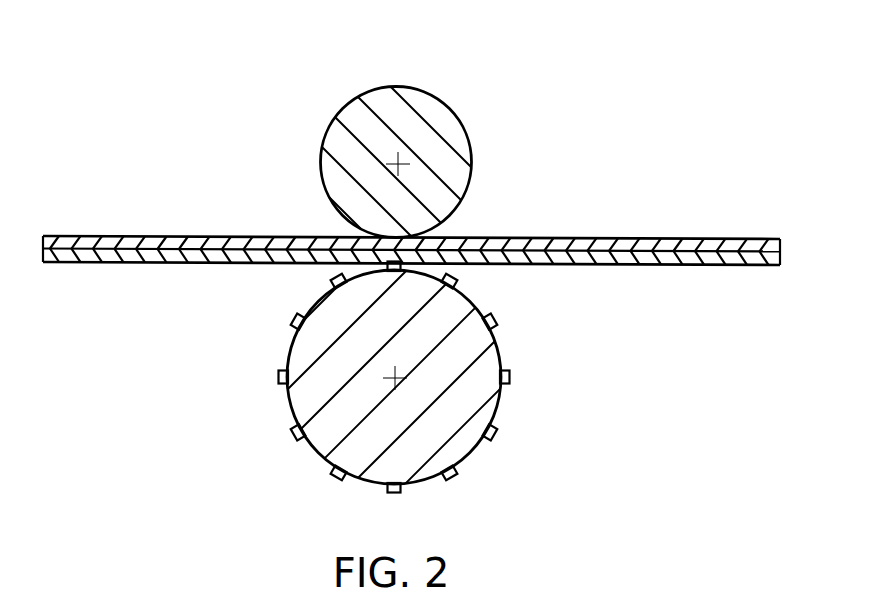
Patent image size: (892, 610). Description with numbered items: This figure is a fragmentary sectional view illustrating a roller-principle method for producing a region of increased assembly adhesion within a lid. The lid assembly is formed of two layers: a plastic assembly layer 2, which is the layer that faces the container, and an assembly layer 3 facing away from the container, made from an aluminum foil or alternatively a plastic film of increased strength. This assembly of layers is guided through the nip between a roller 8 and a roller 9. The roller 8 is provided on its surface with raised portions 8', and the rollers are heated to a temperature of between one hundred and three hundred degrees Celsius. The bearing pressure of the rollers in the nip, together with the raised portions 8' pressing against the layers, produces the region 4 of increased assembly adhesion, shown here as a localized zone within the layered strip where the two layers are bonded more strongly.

The assembly layer 2 is at (411, 247).
The assembly layer 3 is at (713, 265).
The region of increased assembly adhesion 4 is at (583, 250).
The roller 8 is at (362, 382).
The raised portions 8' is at (347, 377).
The roller 9 is at (433, 138).